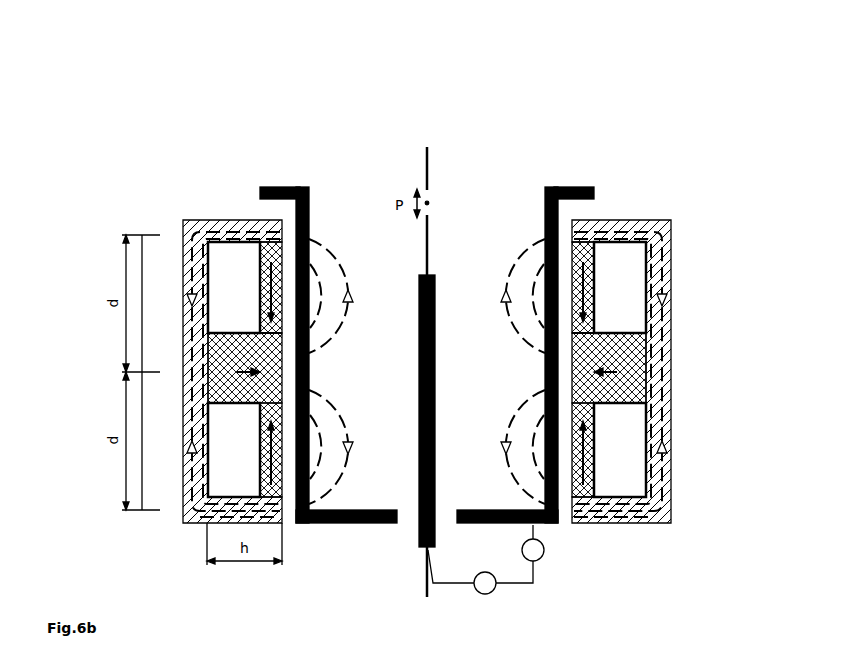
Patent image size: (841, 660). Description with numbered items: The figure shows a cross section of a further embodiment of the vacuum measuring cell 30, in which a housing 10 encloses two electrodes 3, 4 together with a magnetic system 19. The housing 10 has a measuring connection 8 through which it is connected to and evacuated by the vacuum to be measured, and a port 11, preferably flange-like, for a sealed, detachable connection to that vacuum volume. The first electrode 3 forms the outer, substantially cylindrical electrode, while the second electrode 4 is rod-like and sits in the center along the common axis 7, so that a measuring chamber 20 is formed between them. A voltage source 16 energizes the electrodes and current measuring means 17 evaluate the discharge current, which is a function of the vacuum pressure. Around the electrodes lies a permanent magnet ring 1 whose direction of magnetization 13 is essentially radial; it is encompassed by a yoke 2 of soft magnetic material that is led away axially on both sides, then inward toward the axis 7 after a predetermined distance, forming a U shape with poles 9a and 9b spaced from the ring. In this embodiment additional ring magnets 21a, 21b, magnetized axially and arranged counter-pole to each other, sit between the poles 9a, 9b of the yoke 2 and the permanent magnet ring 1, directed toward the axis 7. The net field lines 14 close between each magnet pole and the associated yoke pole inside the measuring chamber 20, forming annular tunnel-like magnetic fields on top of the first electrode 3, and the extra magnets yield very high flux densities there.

The permanent magnet ring 1 is at (224, 340).
The yoke 2 is at (198, 478).
The first electrode 3 is at (311, 375).
The second electrode 4 is at (437, 401).
The axis 7 is at (430, 178).
The measuring connection 8 is at (377, 163).
The pole of the yoke 9a is at (276, 224).
The pole of the yoke 9b is at (277, 518).
The housing 10 is at (546, 200).
The port 11 is at (585, 188).
The direction of magnetization 13 is at (265, 336).
The net field lines 14 is at (346, 274).
The voltage source 16 is at (482, 596).
The current measuring means 17 is at (541, 558).
The magnetic system 19 is at (690, 182).
The measuring chamber 20 is at (383, 357).
The additional ring magnet 21a is at (266, 282).
The additional ring magnet 21b is at (266, 447).
The vacuum measuring cell 30 is at (507, 65).